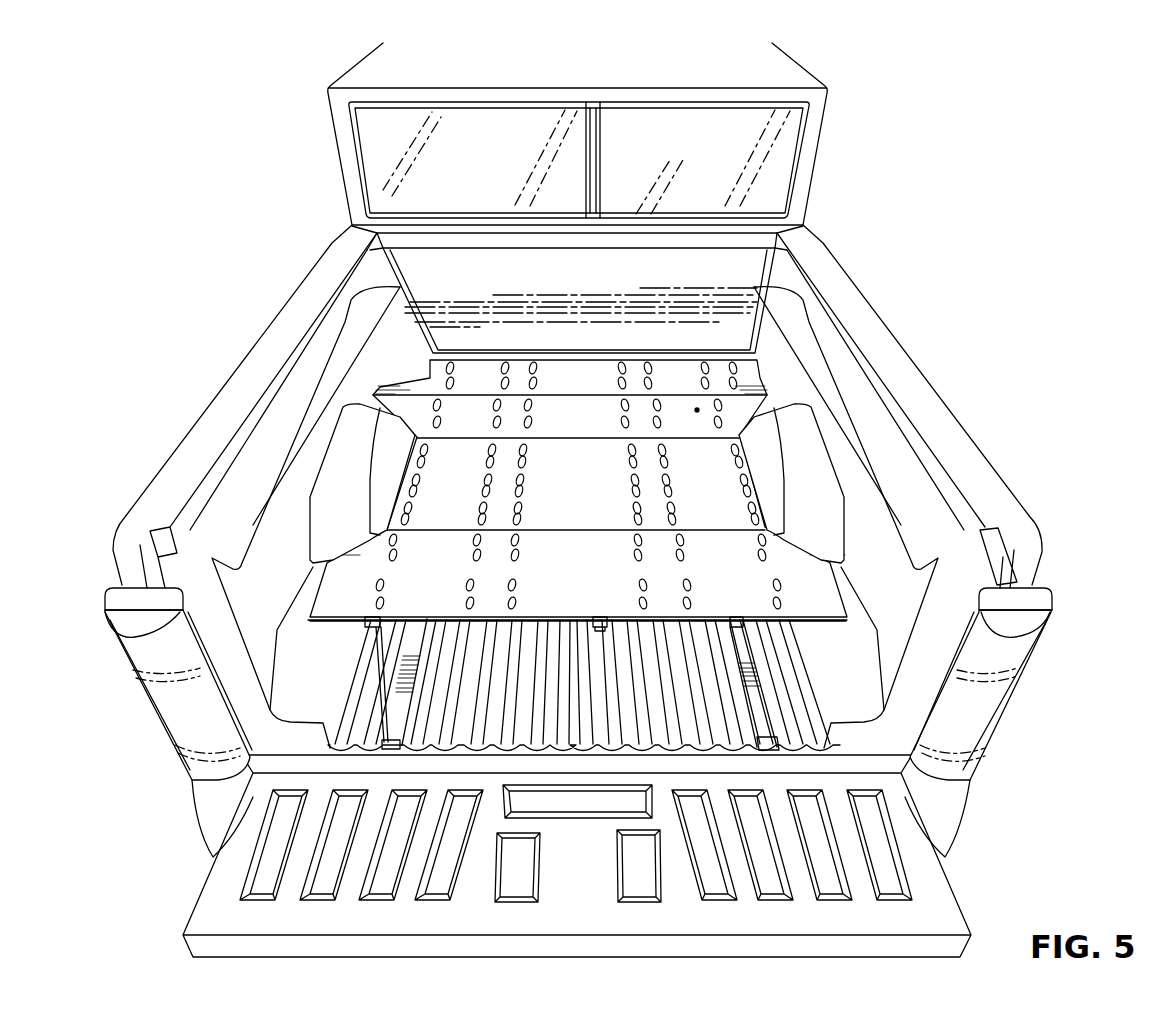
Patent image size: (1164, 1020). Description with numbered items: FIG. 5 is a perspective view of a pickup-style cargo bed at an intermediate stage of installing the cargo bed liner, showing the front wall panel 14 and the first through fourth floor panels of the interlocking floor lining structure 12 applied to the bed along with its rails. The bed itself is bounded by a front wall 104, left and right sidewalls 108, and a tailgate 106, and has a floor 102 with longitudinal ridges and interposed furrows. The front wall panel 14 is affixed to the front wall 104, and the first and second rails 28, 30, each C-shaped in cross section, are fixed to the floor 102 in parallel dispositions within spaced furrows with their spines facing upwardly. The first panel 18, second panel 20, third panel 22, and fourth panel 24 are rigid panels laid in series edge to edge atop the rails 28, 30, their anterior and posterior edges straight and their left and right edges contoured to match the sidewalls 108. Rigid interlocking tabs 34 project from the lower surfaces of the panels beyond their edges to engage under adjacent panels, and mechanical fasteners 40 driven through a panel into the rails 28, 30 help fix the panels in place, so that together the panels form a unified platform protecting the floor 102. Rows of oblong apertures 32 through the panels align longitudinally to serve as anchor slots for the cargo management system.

The interlocking floor lining structure 12 is at (454, 345).
The front wall panel 14 is at (563, 278).
The first interlocking panel 18 is at (582, 362).
The second interlocking panel 20 is at (602, 413).
The third interlocking panel 22 is at (568, 462).
The fourth interlocking panel 24 is at (577, 470).
The first rail 28 is at (392, 700).
The second rail 30 is at (760, 700).
The apertures 32 is at (505, 603).
The interlocking tabs 34 is at (596, 629).
The mechanical fasteners 40 is at (457, 413).
The floor 102 is at (420, 727).
The front wall 104 is at (463, 245).
The tailgate 106 is at (532, 875).
The sidewalls 108 is at (168, 507).